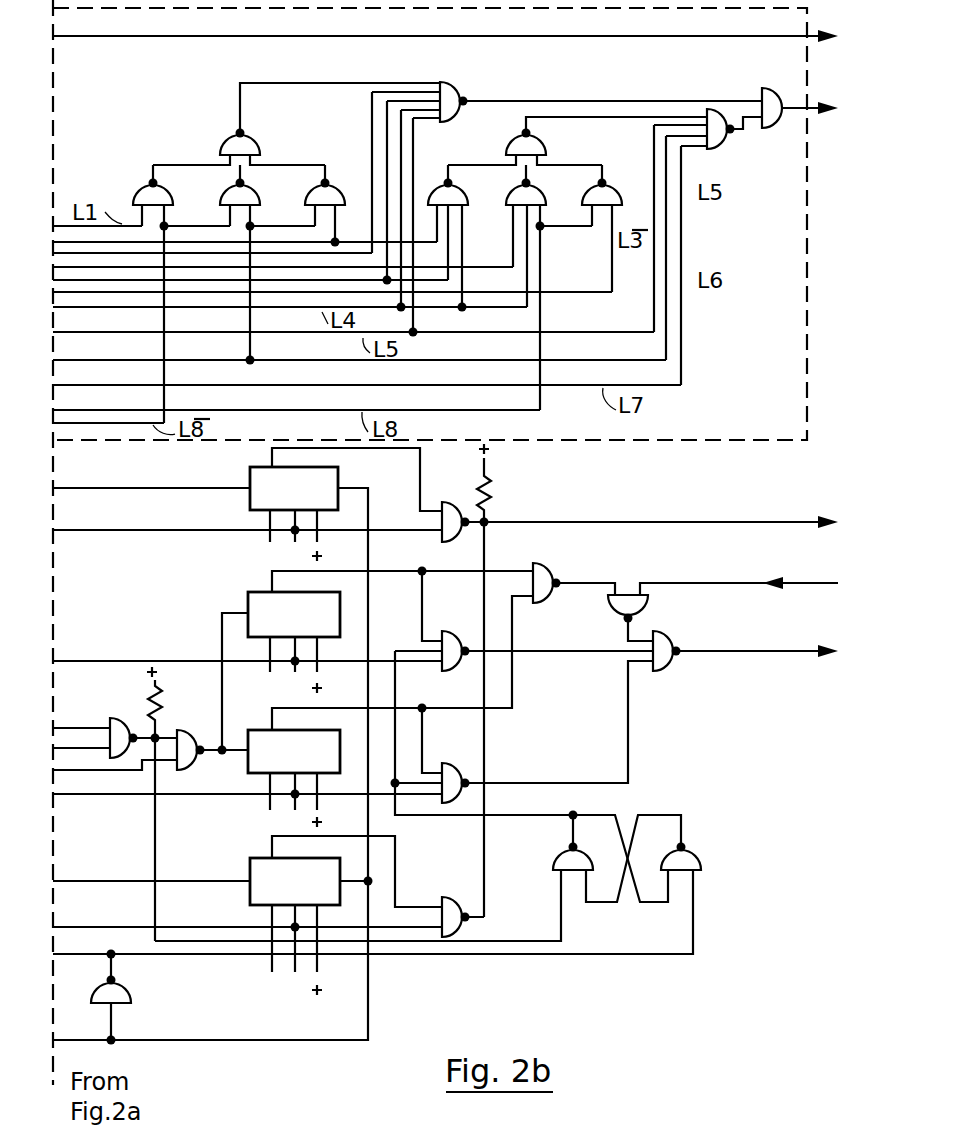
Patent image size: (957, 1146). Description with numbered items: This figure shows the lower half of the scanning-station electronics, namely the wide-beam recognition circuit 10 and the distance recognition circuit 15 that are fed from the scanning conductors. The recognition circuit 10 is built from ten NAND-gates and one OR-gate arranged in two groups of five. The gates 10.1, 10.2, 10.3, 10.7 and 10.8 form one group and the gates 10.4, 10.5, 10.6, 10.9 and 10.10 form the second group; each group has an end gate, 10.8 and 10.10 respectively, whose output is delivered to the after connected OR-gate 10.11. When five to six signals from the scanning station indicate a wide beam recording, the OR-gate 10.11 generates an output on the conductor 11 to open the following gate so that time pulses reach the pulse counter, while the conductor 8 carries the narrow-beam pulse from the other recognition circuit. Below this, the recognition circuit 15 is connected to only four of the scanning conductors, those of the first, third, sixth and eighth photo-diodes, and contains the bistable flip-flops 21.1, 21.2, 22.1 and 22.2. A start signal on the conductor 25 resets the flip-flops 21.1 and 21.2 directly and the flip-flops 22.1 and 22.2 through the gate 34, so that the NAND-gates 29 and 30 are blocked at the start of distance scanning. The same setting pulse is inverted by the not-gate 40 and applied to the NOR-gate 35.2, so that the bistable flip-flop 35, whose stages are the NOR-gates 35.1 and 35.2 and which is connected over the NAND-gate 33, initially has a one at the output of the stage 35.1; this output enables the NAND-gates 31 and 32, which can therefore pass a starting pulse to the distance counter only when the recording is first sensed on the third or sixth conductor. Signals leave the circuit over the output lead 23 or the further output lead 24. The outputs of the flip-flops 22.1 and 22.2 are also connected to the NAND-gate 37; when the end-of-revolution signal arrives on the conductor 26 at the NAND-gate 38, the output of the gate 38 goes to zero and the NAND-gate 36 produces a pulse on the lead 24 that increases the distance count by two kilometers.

The conductor 8 is at (596, 38).
The recognition circuit 10 is at (758, 362).
The NAND-gate 10.1 is at (176, 294).
The NAND-gate 10.2 is at (266, 262).
The NAND-gate 10.3 is at (341, 197).
The NAND-gate 10.4 is at (471, 236).
The NAND-gate 10.5 is at (549, 287).
The NAND-gate 10.6 is at (618, 222).
The NAND-gate 10.7 is at (248, 148).
The NAND-gate 10.8 is at (450, 92).
The NAND-gate 10.9 is at (577, 141).
The NAND-gate 10.10 is at (715, 108).
The OR-gate 10.11 is at (776, 88).
The conductor 11 is at (788, 112).
The recognition circuit 15 is at (90, 605).
The bistable flip-flop 21.1 is at (294, 514).
The bistable flip-flop 21.2 is at (295, 926).
The bistable flip-flop 22.1 is at (294, 642).
The bistable flip-flop 22.2 is at (294, 778).
The output lead 23 is at (574, 519).
The output lead 24 is at (746, 657).
The conductor 25 is at (177, 1043).
The conductor 26 is at (721, 586).
The NAND-gate 29 is at (455, 511).
The NAND-gate 30 is at (454, 906).
The NAND-gate 31 is at (455, 641).
The NAND-gate 32 is at (460, 762).
The NAND-gate 33 is at (125, 712).
The NOR-gate 34 is at (185, 738).
The bistable flip-flop 35 is at (635, 887).
The NOR-gate 35.1 is at (572, 860).
The NOR-gate 35.2 is at (688, 862).
The NAND-gate 36 is at (670, 669).
The NAND-gate 37 is at (547, 594).
The NAND-gate 38 is at (642, 604).
The not-gate 40 is at (125, 996).